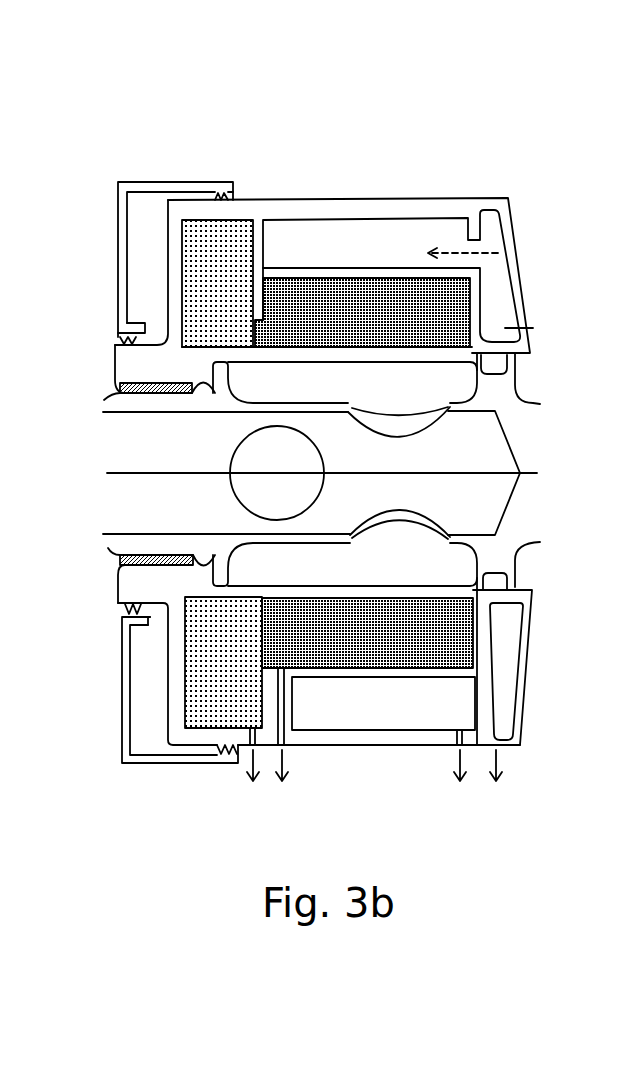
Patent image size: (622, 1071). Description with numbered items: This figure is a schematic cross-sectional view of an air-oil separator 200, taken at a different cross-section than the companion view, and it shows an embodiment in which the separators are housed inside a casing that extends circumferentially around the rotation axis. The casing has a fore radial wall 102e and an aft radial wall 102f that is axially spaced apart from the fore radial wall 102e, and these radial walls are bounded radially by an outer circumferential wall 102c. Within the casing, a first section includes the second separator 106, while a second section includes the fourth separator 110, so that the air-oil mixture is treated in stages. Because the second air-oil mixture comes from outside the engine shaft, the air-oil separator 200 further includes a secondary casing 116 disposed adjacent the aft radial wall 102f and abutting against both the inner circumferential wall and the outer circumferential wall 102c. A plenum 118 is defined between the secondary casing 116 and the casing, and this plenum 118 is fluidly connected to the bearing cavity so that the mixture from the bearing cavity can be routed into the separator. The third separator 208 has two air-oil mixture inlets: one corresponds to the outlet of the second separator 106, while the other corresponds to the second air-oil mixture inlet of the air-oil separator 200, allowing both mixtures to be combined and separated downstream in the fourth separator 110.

The air-oil separator 200 is at (578, 125).
The plenum 118 is at (143, 210).
The fore radial wall 102e is at (517, 263).
The aft radial wall 102f is at (178, 250).
The fourth separator 110 is at (397, 523).
The second separator 106 is at (387, 716).
The third separator 208 is at (223, 662).
The outer circumferential wall 102c is at (367, 738).
The secondary casing 116 is at (172, 763).